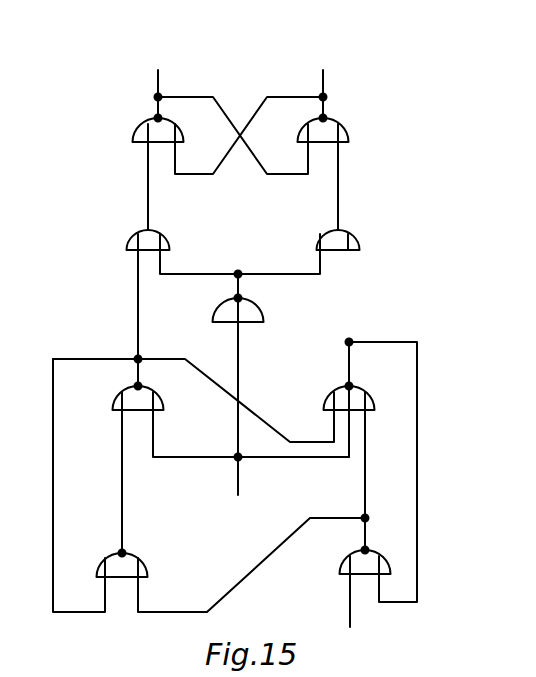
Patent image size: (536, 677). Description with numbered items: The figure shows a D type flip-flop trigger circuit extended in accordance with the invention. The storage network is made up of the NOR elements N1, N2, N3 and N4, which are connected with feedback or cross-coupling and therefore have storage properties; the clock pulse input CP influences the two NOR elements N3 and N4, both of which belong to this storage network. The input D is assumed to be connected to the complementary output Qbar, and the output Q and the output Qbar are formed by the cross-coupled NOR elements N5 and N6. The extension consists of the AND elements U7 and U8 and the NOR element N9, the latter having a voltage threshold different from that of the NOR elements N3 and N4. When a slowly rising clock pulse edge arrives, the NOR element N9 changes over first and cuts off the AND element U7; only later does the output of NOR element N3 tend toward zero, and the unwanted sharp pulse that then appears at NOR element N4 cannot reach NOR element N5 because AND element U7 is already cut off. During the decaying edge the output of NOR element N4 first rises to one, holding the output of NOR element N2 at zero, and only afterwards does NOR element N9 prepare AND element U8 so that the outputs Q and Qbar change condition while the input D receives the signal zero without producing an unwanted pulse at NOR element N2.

The NOR element N1 is at (110, 493).
The NOR element N2 is at (376, 492).
The NOR element N3 is at (124, 330).
The NOR element N4 is at (363, 398).
The NOR element N5 is at (148, 119).
The NOR element N6 is at (337, 119).
The NOR element N9 is at (249, 298).
The AND element U7 is at (134, 196).
The AND element U8 is at (347, 196).
The output Q is at (158, 75).
The complementary output Qbar is at (331, 42).
The clock pulse input CP is at (236, 419).
The input D is at (348, 613).